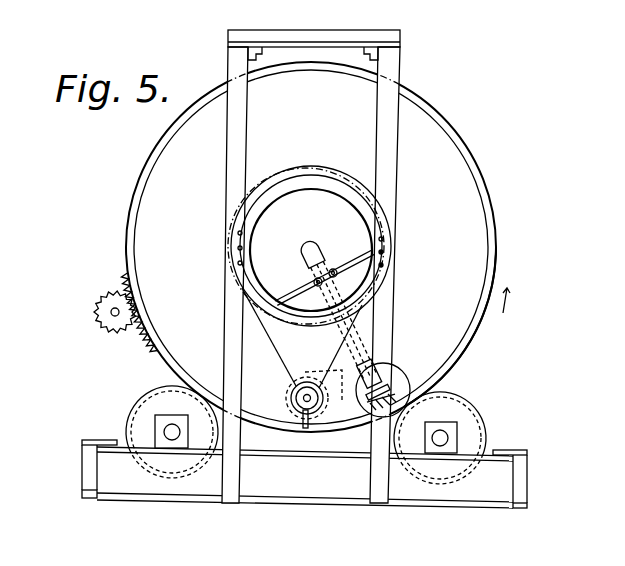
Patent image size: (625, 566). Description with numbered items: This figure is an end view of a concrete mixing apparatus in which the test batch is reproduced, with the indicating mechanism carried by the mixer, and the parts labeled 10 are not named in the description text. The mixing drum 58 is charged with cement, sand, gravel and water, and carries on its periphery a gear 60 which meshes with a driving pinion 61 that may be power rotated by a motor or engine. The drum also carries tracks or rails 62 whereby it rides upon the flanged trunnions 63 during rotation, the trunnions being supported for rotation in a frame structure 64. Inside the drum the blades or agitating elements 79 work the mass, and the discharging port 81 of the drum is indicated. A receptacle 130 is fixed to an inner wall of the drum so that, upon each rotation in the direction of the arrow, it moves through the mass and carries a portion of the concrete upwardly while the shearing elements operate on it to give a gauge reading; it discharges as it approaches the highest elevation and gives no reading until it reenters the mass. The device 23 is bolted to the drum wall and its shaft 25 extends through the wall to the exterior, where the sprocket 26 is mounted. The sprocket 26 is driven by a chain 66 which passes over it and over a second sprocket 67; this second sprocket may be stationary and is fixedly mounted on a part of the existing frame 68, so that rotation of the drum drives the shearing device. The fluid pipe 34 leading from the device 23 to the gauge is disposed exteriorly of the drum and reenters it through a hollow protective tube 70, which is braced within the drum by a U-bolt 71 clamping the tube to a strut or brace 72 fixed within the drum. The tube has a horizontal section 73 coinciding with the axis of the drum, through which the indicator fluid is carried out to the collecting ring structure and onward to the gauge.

The mixing drum 58 is at (155, 201).
The gear 60 is at (130, 280).
The driving pinion 61 is at (118, 332).
The tracks or rails 62 is at (462, 352).
The flanged trunnions 63 is at (145, 418).
The frame structure 64 is at (505, 480).
The frame 68 is at (392, 158).
The discharging port 81 is at (345, 203).
The second sprocket 67 is at (346, 306).
The pins 10 is at (238, 235).
The strut or brace 72 is at (356, 252).
The horizontal section 73 is at (312, 244).
The chain 66 is at (353, 356).
The U-bolt 71 is at (333, 270).
The hollow protective tube 70 is at (397, 376).
The fluid pipe 34 is at (388, 360).
The blades or agitating elements 79 is at (360, 408).
The shaft 25 is at (303, 390).
The receptacle 130 is at (323, 372).
The sprocket 26 is at (292, 398).
The device 23 is at (303, 420).